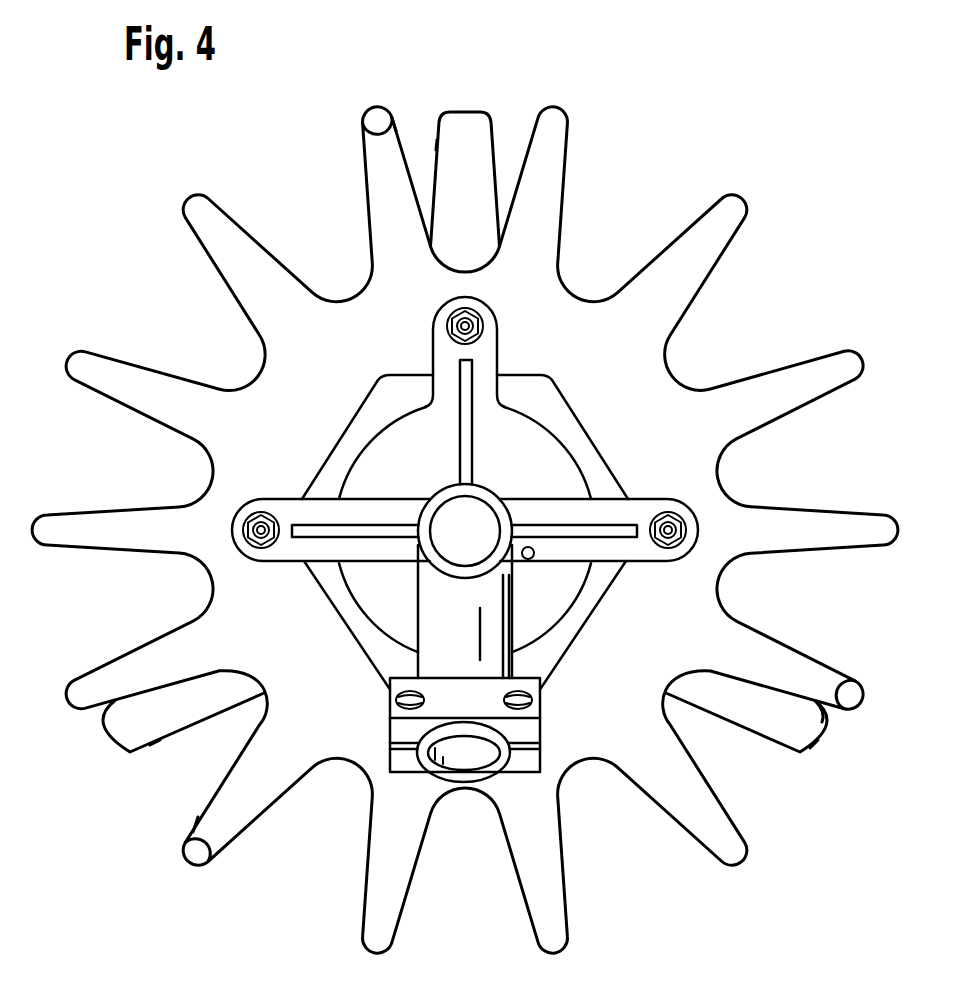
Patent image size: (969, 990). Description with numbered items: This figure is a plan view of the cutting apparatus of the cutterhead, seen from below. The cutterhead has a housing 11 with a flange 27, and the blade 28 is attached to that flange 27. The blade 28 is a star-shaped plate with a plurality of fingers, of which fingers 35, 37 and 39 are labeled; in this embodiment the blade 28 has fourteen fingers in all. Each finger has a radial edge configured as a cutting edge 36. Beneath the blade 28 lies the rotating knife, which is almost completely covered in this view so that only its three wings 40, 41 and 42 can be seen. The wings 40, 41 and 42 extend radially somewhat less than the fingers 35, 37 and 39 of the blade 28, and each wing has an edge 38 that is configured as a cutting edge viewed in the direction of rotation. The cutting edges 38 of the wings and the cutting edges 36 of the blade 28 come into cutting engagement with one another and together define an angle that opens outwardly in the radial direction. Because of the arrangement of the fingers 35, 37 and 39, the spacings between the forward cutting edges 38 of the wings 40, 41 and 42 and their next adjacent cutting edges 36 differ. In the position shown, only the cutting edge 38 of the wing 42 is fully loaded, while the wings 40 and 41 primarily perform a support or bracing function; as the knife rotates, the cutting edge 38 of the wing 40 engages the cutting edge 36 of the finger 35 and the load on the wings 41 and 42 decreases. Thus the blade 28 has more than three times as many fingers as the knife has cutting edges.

The housing 11 is at (387, 618).
The flange 27 is at (348, 618).
The blade 28 is at (652, 400).
The finger 35 is at (210, 851).
The cutting edge 36 is at (400, 138).
The finger 37 is at (841, 688).
The cutting edge 38 is at (437, 140).
The finger 39 is at (377, 116).
The wing 40 is at (122, 742).
The wing 41 is at (795, 730).
The wing 42 is at (472, 148).